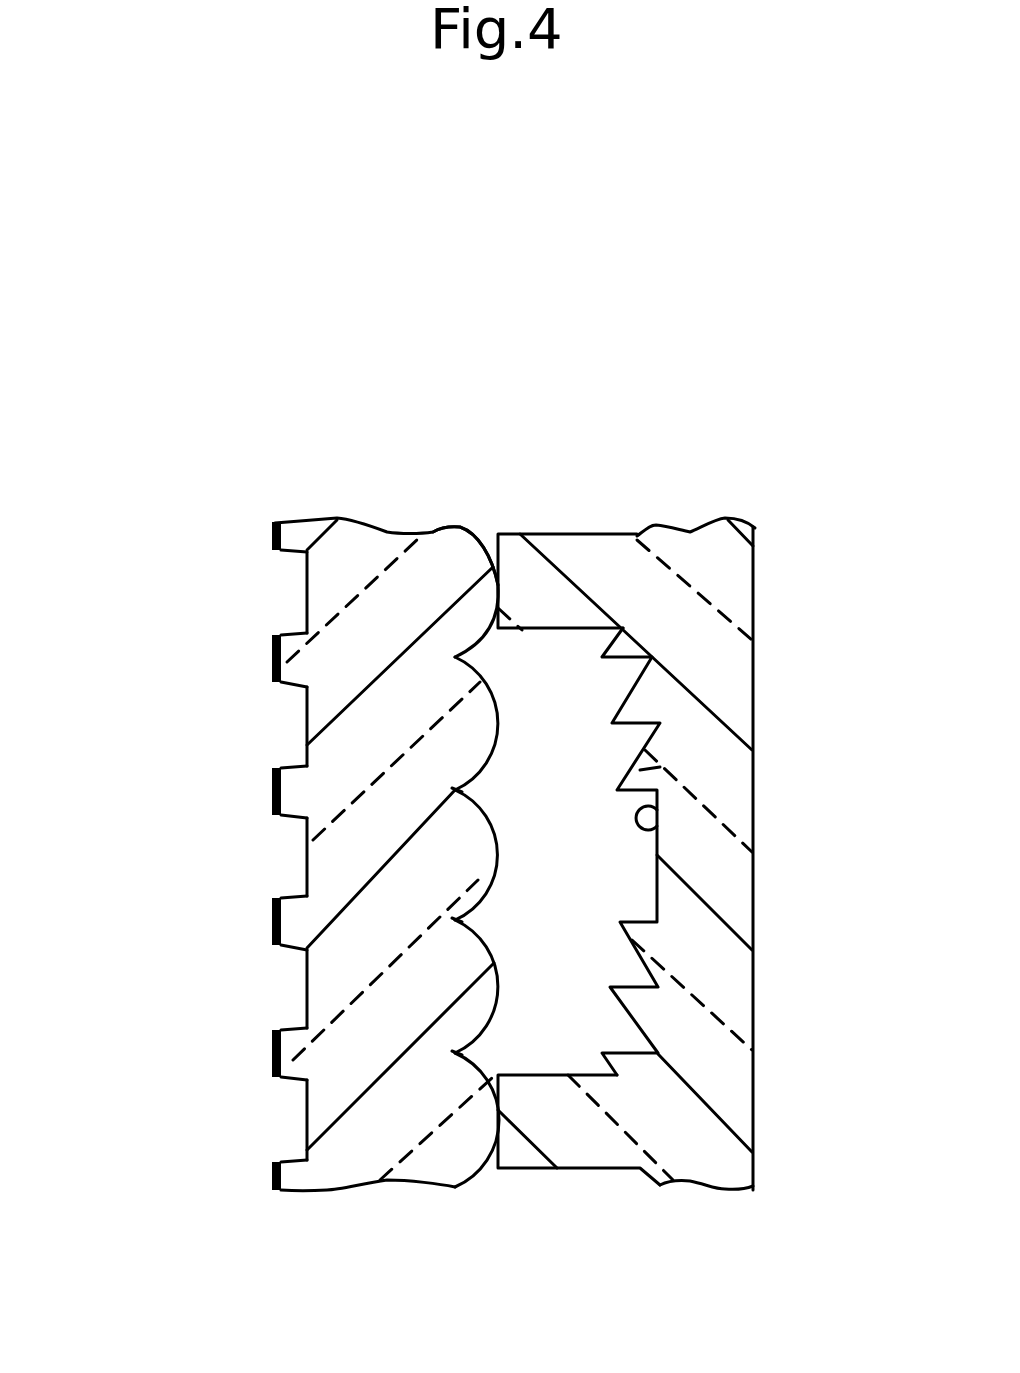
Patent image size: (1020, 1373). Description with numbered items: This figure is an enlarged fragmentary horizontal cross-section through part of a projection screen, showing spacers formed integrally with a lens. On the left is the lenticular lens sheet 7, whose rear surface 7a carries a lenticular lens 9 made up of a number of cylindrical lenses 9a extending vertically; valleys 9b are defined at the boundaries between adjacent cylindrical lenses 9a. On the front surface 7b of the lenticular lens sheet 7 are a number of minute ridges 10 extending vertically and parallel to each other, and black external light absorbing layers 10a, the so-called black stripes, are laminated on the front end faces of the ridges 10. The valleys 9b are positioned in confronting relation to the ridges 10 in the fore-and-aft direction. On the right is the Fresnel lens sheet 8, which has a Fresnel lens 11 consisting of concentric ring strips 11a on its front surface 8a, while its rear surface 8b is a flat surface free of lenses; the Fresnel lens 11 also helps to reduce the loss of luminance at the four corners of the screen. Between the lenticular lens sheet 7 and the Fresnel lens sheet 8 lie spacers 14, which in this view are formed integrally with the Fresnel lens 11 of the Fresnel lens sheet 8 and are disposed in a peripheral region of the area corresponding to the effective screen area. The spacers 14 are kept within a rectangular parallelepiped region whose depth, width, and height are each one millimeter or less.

The lenticular lens sheet 7 is at (377, 528).
The rear surface 7a is at (437, 530).
The front surface 7b is at (305, 590).
The Fresnel lens sheet 8 is at (702, 527).
The front surface 8a is at (653, 800).
The rear surface 8b is at (755, 615).
The lenticular lens 9 is at (583, 922).
The cylindrical lenses 9a is at (485, 720).
The valleys 9b is at (235, 745).
The ridges 10 is at (283, 690).
The external light absorbing layers 10a is at (277, 663).
The Fresnel lens 11 is at (630, 682).
The ring strips 11a is at (440, 753).
The spacers 14 is at (512, 537).